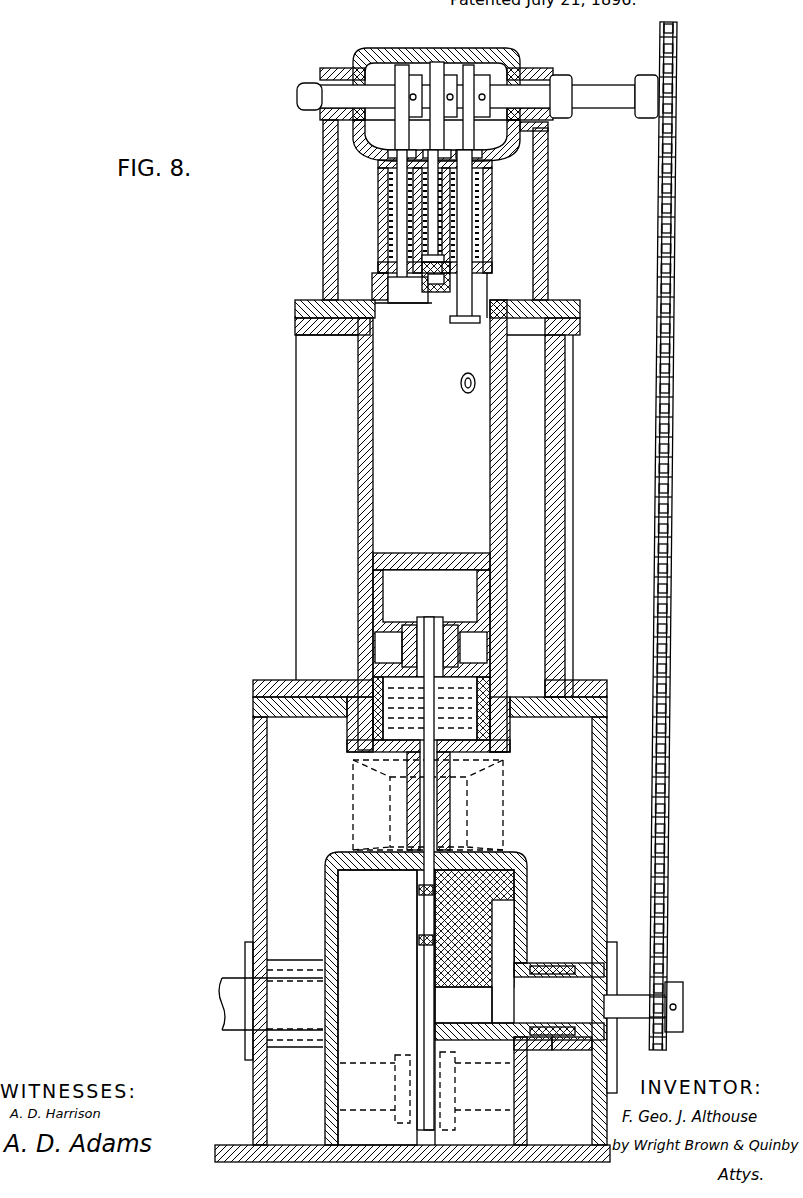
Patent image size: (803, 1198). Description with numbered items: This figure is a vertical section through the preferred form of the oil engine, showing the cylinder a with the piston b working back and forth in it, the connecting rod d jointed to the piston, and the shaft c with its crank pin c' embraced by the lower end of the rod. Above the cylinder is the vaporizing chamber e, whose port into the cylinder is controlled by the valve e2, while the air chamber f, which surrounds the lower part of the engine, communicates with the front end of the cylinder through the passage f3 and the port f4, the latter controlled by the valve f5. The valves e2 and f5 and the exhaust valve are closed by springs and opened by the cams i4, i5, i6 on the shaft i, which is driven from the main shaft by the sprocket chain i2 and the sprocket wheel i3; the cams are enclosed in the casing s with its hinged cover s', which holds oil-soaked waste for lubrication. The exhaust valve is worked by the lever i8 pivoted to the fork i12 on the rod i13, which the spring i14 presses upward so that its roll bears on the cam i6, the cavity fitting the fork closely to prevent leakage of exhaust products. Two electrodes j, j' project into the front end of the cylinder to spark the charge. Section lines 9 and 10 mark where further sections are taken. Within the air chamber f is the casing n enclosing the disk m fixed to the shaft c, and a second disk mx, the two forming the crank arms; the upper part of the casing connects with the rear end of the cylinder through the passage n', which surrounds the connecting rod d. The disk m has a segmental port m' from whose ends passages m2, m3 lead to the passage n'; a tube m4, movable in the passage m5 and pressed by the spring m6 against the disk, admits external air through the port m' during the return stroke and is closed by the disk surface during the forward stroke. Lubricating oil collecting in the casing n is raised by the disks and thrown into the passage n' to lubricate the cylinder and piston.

The cam i5 is at (401, 65).
The cam i6 is at (439, 62).
The cam i4 is at (470, 65).
The hinged cover s' is at (445, 77).
The shaft i is at (597, 95).
The sprocket-wheel i3 is at (679, 80).
The casing s is at (450, 148).
The section line 9 is at (592, 190).
The vaporizing-chamber e is at (525, 217).
The rod i13 is at (435, 208).
The spring i14 is at (448, 245).
The port f4 is at (372, 284).
The section line 10 is at (588, 284).
The valve f5 is at (398, 304).
The lever i8 is at (434, 300).
The fork i12 is at (462, 323).
The valve e2 is at (481, 319).
The electrode j is at (451, 392).
The electrode j' is at (471, 399).
The passage or outlet f3 is at (530, 387).
The cylinder a is at (498, 468).
The piston b is at (482, 588).
The connecting-rod d is at (427, 787).
The passage n' is at (453, 801).
The air-chamber f is at (283, 826).
The casing n is at (430, 985).
The disk m is at (499, 921).
The segmental port m' is at (527, 957).
The passage m3 is at (430, 927).
The disk mx is at (377, 1007).
The passage m2 is at (463, 1005).
The tube m4 is at (605, 997).
The shaft c is at (258, 1001).
The passage m5 is at (537, 1041).
The spring m6 is at (562, 1041).
The crank-pin c' is at (478, 1146).
The sprocket-chain i2 is at (675, 508).